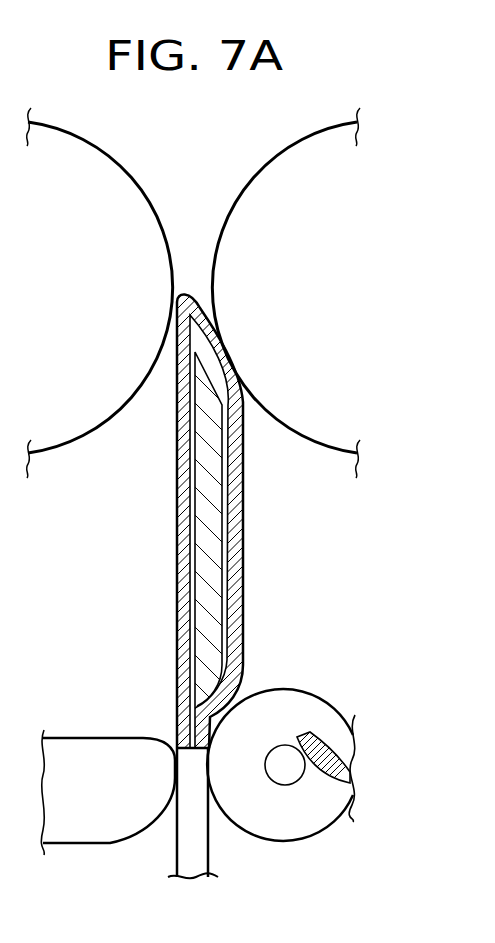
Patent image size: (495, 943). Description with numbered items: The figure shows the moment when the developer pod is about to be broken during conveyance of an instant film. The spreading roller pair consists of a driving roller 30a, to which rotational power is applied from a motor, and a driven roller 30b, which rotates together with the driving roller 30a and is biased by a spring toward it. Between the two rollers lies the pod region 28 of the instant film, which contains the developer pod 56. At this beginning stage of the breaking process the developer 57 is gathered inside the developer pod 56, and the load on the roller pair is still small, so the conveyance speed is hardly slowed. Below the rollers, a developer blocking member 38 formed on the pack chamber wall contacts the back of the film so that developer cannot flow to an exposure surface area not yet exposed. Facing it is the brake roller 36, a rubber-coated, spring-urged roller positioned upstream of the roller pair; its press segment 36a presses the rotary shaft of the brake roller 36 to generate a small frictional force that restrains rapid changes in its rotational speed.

The driving roller 30a is at (270, 304).
The driven roller 30b is at (67, 304).
The pod region 28 is at (243, 542).
The developer pod 56 is at (226, 488).
The developer 57 is at (208, 516).
The developer blocking member 38 is at (173, 743).
The brake roller 36 is at (288, 698).
The press segment 36a is at (323, 740).